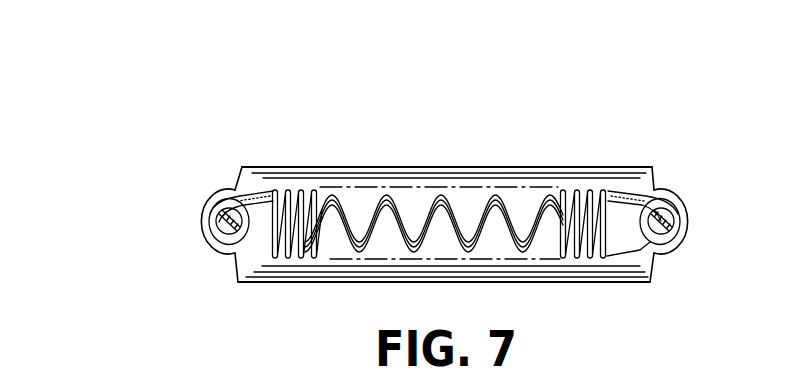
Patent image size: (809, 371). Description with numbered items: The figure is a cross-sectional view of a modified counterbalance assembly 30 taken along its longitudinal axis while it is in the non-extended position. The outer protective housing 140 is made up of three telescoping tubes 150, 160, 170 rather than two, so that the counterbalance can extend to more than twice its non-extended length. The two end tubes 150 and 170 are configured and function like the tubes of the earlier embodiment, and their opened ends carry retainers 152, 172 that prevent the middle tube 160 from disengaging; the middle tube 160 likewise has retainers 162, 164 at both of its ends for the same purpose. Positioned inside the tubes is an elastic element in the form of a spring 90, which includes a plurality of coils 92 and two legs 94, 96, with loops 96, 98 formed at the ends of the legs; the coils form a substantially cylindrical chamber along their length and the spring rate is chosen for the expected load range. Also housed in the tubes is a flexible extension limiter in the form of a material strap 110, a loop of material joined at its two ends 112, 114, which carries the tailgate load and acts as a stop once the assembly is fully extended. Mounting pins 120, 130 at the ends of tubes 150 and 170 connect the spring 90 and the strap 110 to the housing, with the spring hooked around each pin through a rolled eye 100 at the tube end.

The counterbalance assembly 30 is at (262, 128).
The spring 90 is at (581, 188).
The coils 92 is at (320, 256).
The leg 94 is at (250, 190).
The leg 96 is at (640, 247).
The loop 98 is at (212, 243).
The eye 100 is at (676, 236).
The strap 110 is at (512, 208).
The strap end 112 is at (208, 237).
The strap end 114 is at (648, 252).
The mounting pin 120 is at (216, 214).
The mounting pin 130 is at (684, 210).
The protective housing 140 is at (566, 292).
The tube 150 is at (322, 166).
The retainer 152 is at (636, 170).
The tube 160 is at (376, 170).
The retainer 162 is at (240, 166).
The retainer 164 is at (643, 178).
The tube 170 is at (453, 177).
The retainer 172 is at (258, 268).